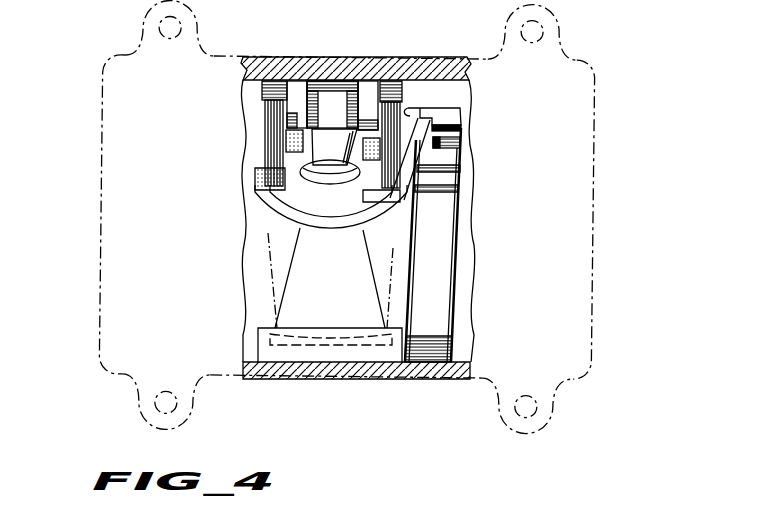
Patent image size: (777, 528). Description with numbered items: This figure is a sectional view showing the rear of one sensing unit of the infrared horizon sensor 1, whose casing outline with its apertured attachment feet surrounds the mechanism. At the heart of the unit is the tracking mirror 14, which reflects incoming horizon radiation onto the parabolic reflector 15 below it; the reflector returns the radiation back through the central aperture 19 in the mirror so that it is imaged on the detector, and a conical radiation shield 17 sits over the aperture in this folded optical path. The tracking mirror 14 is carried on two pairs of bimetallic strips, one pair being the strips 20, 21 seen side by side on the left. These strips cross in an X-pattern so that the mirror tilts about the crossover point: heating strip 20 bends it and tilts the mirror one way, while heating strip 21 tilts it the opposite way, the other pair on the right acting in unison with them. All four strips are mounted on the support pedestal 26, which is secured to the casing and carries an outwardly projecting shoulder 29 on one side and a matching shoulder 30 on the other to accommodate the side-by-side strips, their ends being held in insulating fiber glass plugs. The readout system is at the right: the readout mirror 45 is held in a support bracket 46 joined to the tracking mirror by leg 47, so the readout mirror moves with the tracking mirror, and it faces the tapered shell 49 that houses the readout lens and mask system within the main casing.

The infrared horizon sensor 1 is at (616, 63).
The tracking mirror 14 is at (308, 222).
The parabolic reflector 15 is at (357, 336).
The conical radiation shield 17 is at (320, 175).
The central aperture 19 is at (323, 170).
The bimetallic strip 20 is at (266, 131).
The bimetallic strip 21 is at (290, 146).
The support pedestal 26 is at (294, 89).
The outwardly projecting shoulder 29 is at (398, 105).
The outwardly projecting shoulder 30 is at (268, 89).
The readout mirror 45 is at (448, 142).
The support bracket 46 is at (450, 118).
The leg 47 is at (392, 185).
The tapered shell 49 is at (445, 245).